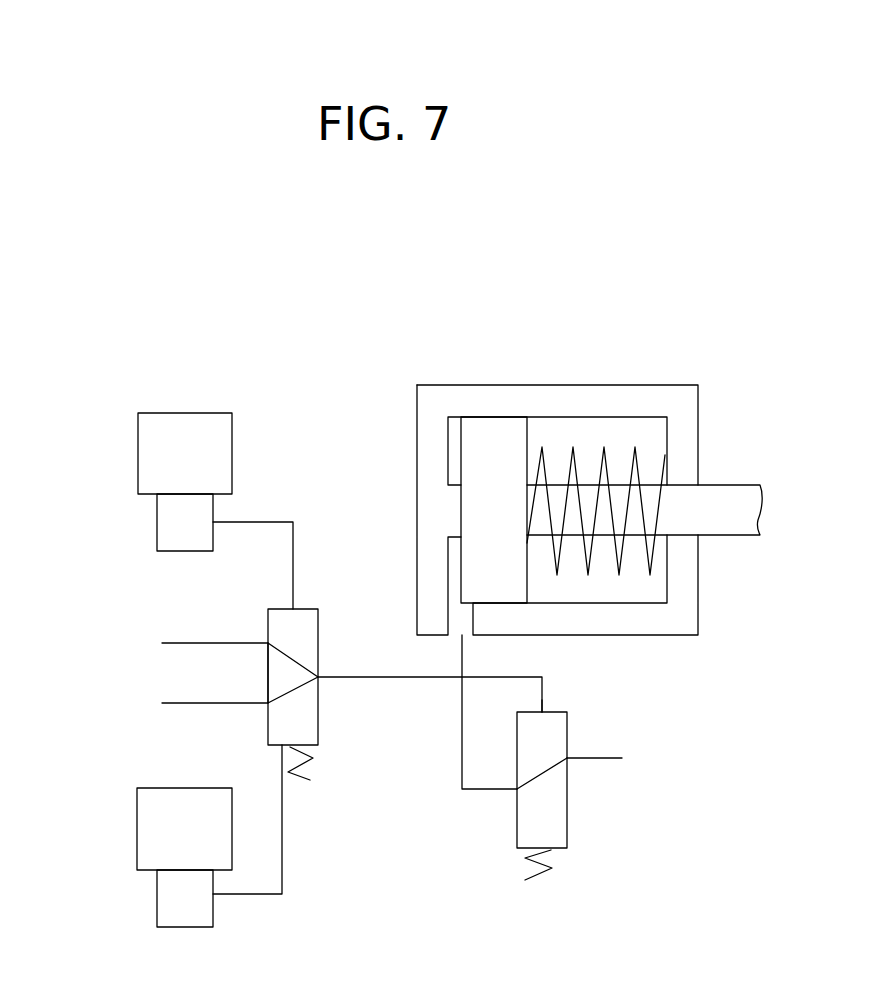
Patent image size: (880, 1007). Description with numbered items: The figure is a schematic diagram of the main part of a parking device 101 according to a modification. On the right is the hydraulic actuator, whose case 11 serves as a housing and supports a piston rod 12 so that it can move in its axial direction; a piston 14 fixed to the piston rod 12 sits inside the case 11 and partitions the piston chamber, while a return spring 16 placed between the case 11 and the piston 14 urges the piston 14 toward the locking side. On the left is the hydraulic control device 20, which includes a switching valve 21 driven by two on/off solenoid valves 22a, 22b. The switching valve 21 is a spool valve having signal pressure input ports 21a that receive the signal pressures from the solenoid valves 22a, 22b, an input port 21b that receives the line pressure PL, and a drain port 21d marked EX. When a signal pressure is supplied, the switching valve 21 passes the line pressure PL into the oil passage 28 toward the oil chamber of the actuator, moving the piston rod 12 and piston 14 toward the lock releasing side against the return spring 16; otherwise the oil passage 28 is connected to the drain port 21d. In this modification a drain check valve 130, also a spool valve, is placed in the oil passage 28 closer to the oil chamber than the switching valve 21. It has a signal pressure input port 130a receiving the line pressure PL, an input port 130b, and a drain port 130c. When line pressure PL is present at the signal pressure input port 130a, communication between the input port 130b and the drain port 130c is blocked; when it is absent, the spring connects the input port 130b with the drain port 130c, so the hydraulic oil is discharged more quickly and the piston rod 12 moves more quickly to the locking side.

The parking device 101 is at (313, 397).
The case 11 is at (572, 403).
The piston rod 12 is at (718, 503).
The piston 14 is at (495, 433).
The return spring 16 is at (638, 465).
The hydraulic control device 20 is at (108, 427).
The on/off solenoid valve 22a is at (138, 463).
The on/off solenoid valve 22b is at (137, 837).
The switching valve 21 is at (305, 610).
The signal pressure input port 21a is at (293, 607).
The input port 21b is at (268, 703).
The drain port 21d is at (268, 642).
The oil passage 28 is at (370, 677).
The drain check valve 130 is at (567, 733).
The signal pressure input port 130a is at (542, 708).
The input port 130b is at (517, 789).
The drain port 130c is at (567, 758).